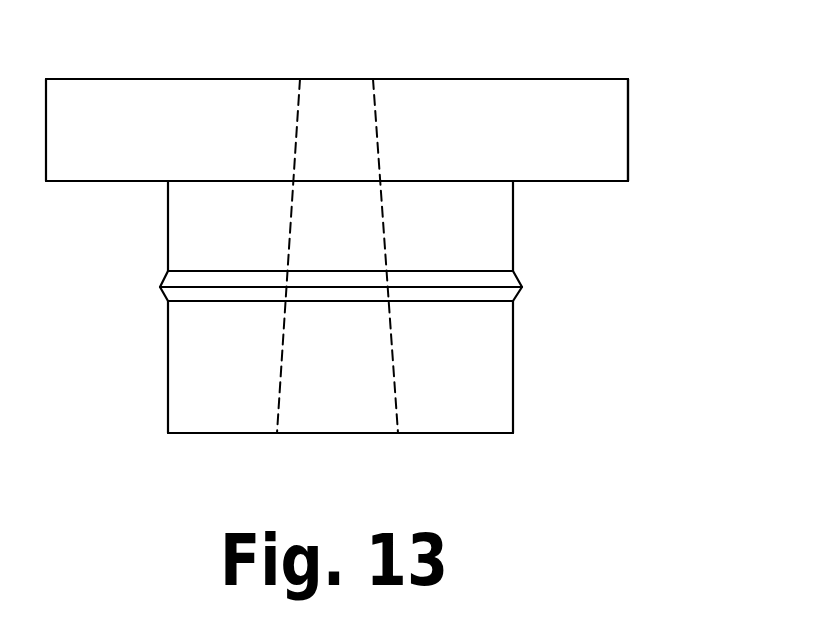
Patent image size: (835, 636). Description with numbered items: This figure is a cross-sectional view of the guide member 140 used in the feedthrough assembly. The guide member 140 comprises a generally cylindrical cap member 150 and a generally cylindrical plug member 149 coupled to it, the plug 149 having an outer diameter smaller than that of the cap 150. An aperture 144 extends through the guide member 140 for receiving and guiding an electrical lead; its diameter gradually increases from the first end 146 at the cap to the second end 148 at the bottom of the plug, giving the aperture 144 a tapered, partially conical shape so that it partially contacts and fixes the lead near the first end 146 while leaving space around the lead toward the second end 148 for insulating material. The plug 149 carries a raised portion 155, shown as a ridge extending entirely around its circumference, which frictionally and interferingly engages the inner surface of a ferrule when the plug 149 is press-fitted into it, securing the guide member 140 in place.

The guide member 140 is at (672, 97).
The aperture 144 is at (317, 402).
The first end 146 is at (457, 79).
The second end 148 is at (447, 433).
The plug member 149 is at (185, 387).
The cap member 150 is at (583, 153).
The raised portion 155 is at (522, 287).